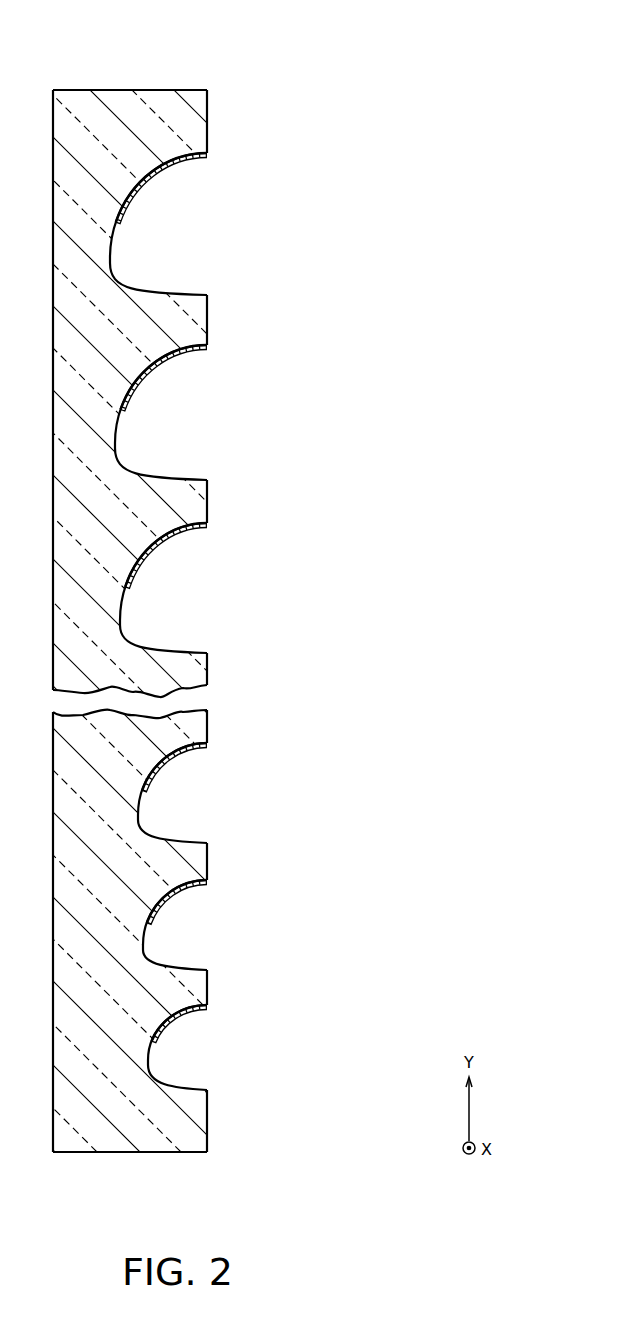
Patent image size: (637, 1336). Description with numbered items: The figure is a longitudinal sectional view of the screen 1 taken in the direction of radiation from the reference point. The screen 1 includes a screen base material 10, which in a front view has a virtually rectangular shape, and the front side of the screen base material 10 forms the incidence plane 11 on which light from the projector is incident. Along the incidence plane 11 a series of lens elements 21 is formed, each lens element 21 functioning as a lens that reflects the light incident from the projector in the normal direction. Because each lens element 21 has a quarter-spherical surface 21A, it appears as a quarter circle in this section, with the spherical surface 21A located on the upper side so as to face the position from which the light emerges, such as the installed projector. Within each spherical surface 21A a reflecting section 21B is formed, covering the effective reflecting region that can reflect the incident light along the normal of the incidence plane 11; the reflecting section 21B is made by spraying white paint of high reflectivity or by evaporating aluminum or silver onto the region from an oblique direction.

The screen 1 is at (250, 68).
The screen base material 10 is at (117, 102).
The incidence plane 11 is at (207, 103).
The lens element 21 is at (278, 183).
The spherical surface 21A is at (158, 167).
The reflecting section 21B is at (131, 200).